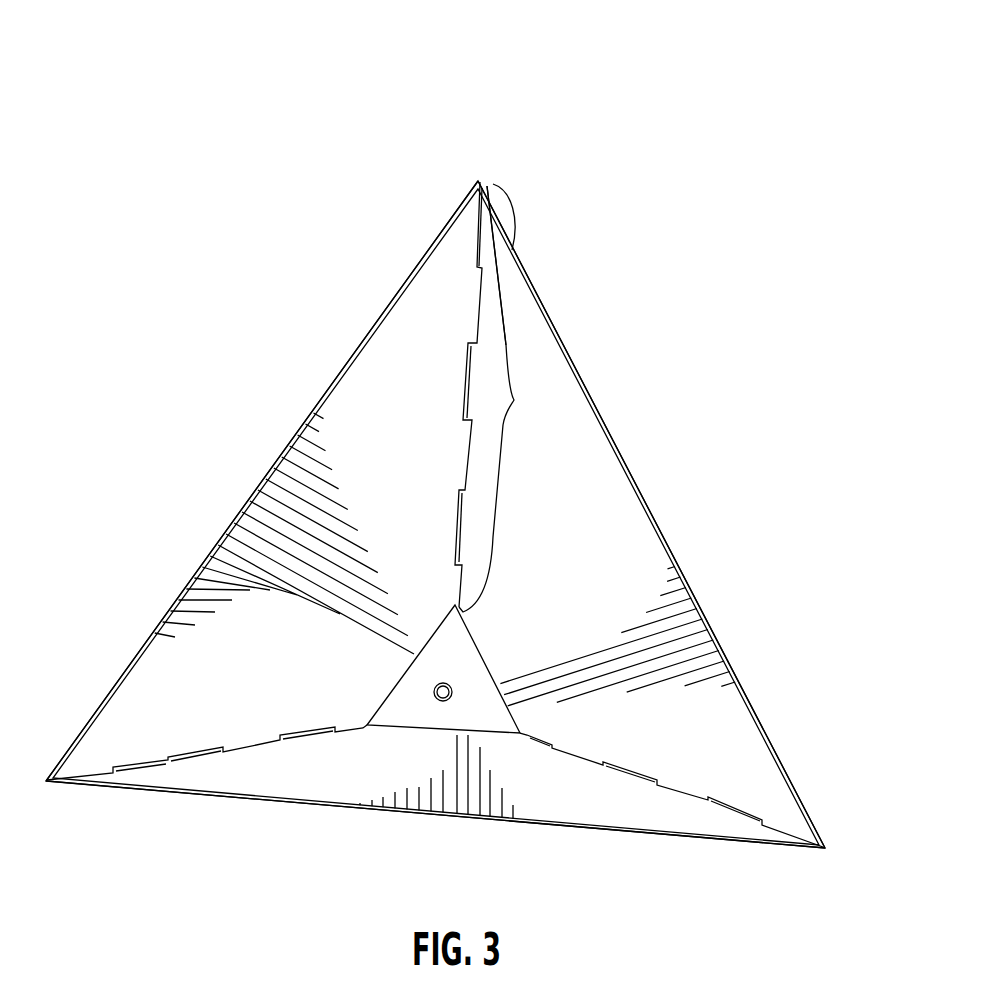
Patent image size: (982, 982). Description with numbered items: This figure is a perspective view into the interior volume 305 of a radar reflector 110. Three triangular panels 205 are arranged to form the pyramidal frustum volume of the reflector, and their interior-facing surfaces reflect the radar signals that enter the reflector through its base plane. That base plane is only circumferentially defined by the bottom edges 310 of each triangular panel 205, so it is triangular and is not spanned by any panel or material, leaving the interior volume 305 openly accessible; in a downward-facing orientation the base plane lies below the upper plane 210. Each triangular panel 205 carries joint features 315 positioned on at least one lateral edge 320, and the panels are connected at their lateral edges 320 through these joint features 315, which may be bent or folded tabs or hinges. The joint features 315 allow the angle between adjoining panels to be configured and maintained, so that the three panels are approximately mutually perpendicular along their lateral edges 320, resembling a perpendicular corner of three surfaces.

The radar reflector 110 is at (787, 37).
The triangular panel 205 is at (333, 830).
The upper plane 210 is at (481, 836).
The interior volume 305 is at (367, 567).
The bottom edge 310 is at (683, 517).
The joint feature 315 is at (474, 295).
The lateral edge 320 is at (524, 403).